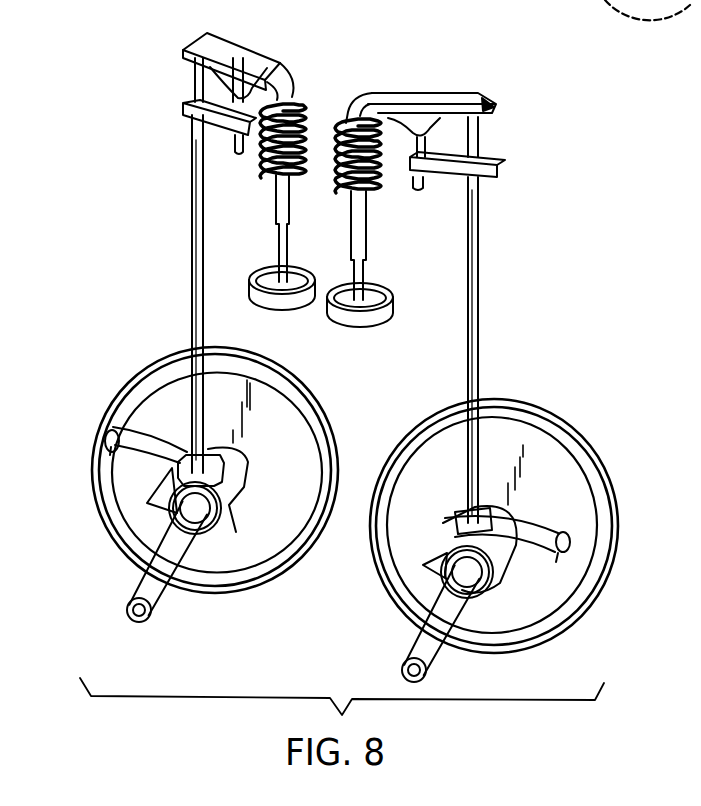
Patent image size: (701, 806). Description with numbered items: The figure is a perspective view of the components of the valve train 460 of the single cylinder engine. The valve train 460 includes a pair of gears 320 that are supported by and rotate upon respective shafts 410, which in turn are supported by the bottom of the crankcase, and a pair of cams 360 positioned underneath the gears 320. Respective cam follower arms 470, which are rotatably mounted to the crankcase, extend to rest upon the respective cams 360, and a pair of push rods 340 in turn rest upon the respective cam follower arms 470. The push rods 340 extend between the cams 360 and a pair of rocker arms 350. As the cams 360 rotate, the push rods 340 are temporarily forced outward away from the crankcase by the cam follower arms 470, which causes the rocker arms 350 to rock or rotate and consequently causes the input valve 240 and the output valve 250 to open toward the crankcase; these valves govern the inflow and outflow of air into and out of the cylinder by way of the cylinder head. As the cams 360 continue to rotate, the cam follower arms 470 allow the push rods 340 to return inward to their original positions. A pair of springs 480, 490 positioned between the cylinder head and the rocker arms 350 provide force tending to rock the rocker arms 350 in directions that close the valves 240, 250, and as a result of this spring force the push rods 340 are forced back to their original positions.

The valve train 460 is at (98, 134).
The rocker arms 350 is at (257, 68).
The spring 490 is at (307, 100).
The spring 480 is at (340, 117).
The push rods 340 is at (192, 220).
The output valve 250 is at (305, 265).
The input valve 240 is at (390, 290).
The gears 320 is at (392, 450).
The cam follower arms 470 is at (177, 459).
The cams 360 is at (232, 520).
The shafts 410 is at (129, 600).